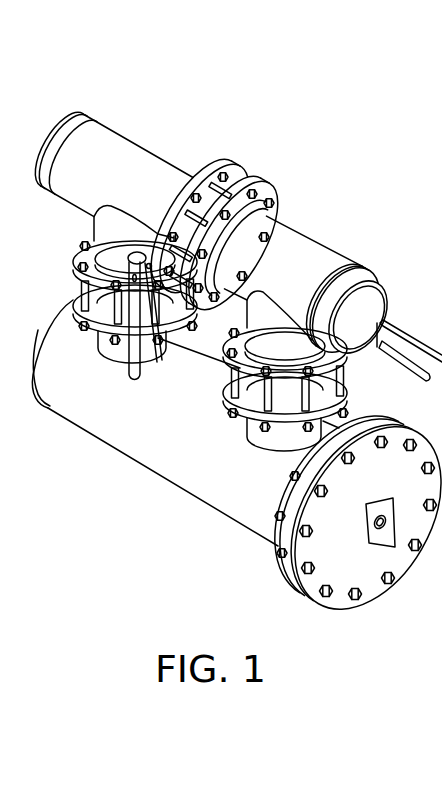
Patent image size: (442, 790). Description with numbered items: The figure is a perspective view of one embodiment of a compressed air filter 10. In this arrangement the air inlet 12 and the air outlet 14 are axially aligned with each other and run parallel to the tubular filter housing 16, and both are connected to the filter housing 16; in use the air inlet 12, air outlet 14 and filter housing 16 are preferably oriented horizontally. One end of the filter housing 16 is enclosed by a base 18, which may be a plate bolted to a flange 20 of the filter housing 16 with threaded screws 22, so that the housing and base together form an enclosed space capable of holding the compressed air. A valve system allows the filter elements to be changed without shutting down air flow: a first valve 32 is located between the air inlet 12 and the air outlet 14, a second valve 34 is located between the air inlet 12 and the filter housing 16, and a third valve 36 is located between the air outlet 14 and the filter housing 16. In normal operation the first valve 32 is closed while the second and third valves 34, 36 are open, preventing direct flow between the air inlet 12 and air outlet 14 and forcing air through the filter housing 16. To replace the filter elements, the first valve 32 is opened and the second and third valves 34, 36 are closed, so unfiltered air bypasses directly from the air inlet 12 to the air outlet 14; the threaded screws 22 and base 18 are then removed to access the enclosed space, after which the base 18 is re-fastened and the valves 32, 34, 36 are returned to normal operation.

The compressed air filter 10 is at (266, 143).
The air inlet 12 is at (379, 292).
The air outlet 14 is at (44, 132).
The filter housing 16 is at (187, 487).
The base 18 is at (338, 566).
The flange 20 is at (285, 567).
The threaded screws 22 is at (418, 440).
The first valve 32 is at (130, 330).
The second valve 34 is at (408, 338).
The third valve 36 is at (72, 251).